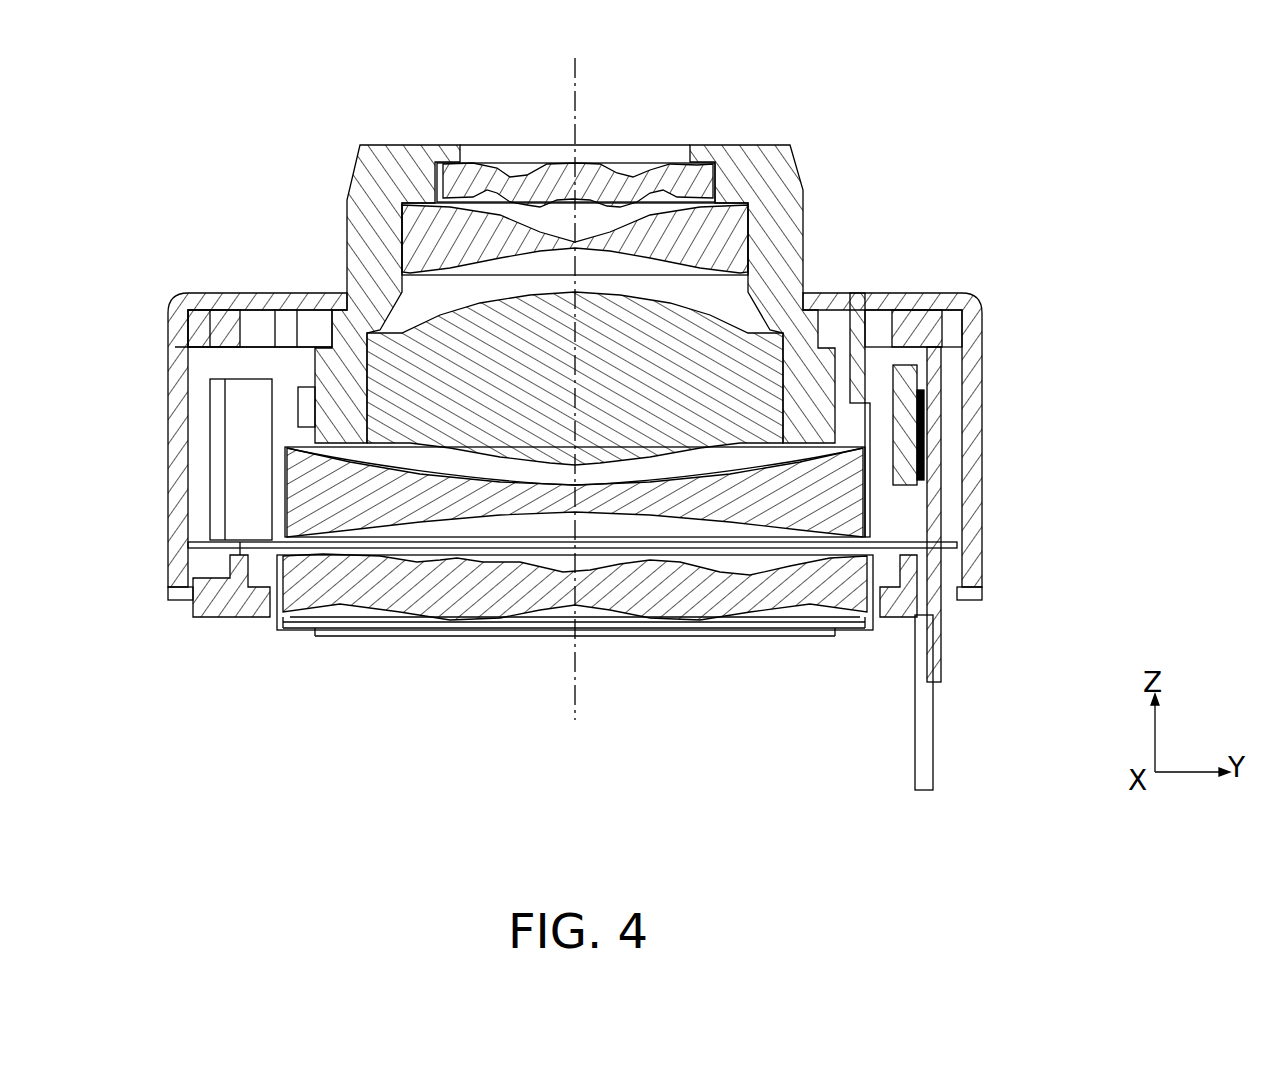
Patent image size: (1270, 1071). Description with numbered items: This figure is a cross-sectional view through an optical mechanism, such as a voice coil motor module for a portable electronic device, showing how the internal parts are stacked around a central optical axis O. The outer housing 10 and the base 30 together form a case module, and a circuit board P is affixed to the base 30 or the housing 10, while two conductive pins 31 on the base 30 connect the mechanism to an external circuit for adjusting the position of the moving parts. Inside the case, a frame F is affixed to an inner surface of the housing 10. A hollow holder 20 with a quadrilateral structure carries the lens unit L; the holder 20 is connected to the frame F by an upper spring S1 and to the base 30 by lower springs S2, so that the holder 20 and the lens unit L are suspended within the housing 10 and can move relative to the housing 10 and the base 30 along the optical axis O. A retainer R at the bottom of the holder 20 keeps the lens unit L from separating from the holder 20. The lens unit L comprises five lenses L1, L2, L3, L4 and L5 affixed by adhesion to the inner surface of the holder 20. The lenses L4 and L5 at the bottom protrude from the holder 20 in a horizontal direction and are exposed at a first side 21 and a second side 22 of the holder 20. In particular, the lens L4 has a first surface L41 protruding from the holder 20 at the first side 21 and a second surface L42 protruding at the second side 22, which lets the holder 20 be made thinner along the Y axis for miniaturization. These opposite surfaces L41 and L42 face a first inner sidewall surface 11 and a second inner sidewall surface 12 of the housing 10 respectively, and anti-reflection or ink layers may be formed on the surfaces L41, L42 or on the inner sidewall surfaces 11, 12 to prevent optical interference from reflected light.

The optical axis O is at (574, 373).
The lens unit L is at (572, 386).
The holder 20 is at (335, 183).
The first side 21 is at (307, 370).
The upper spring S1 is at (297, 338).
The housing 10 is at (205, 292).
The frame F is at (223, 328).
The lens L1 is at (705, 184).
The lens L2 is at (732, 237).
The second side 22 is at (845, 362).
The lens L3 is at (758, 380).
The first inner sidewall surface 11 is at (203, 433).
The second inner sidewall surface 12 is at (948, 433).
The first surface L41 is at (288, 476).
The second surface L42 is at (865, 477).
The lens L4 is at (847, 512).
The base 30 is at (218, 610).
The lower spring S2 is at (241, 549).
The retainer R is at (329, 631).
The lens L5 is at (455, 605).
The circuit board P is at (937, 640).
The conductive pin 31 is at (925, 735).